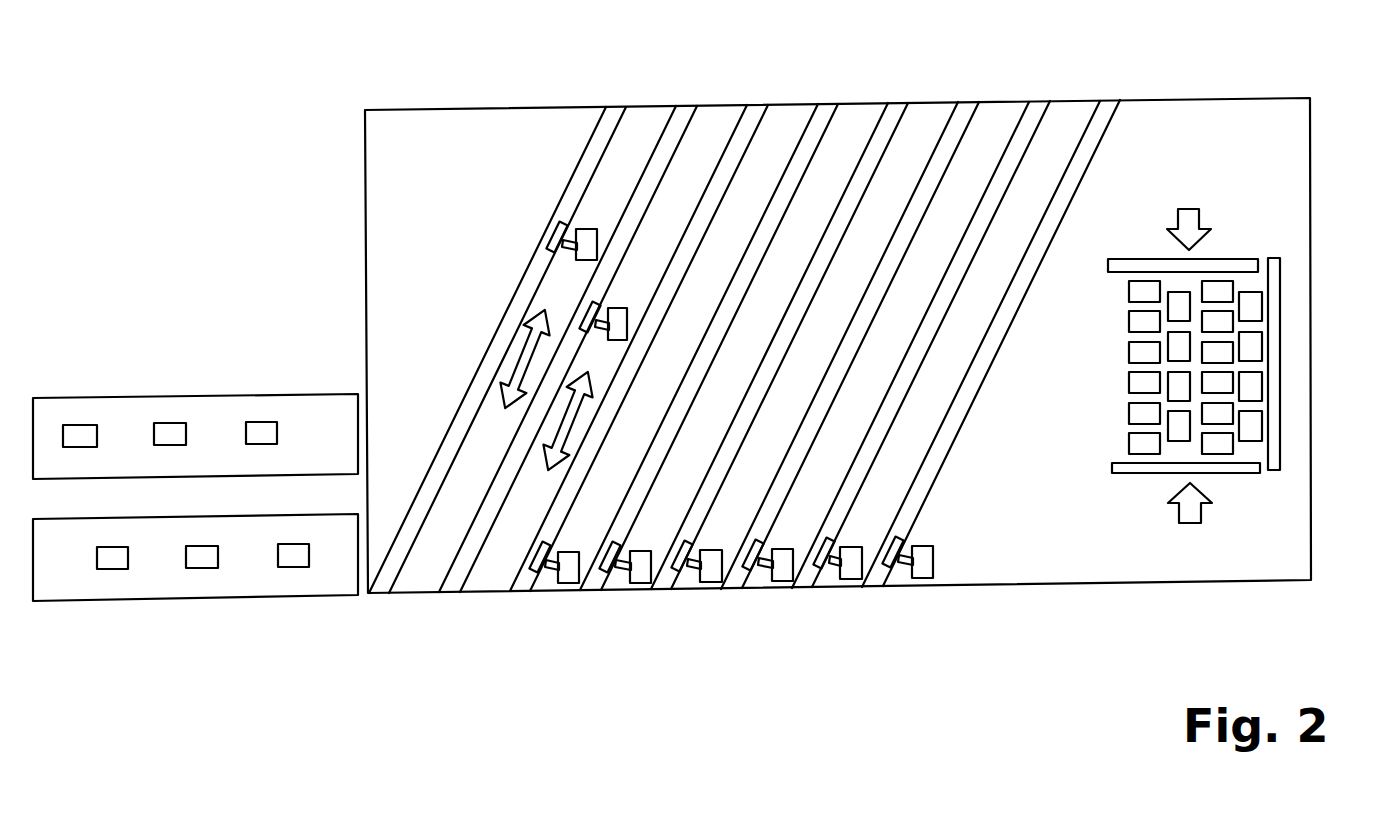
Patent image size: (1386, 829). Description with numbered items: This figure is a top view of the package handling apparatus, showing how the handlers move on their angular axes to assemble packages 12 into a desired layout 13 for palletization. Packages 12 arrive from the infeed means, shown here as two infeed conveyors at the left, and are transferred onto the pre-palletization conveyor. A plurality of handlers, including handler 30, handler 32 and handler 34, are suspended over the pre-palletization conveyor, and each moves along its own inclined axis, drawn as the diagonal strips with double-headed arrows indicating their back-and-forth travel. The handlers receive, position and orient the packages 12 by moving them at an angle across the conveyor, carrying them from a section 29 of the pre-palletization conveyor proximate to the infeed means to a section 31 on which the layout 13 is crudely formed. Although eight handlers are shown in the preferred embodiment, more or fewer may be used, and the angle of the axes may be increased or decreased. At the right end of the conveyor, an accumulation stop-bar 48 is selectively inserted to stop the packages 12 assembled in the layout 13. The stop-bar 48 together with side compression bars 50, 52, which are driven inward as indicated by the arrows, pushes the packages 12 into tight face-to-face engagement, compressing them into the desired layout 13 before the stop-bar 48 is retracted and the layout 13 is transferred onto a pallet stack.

The packages 12 is at (177, 435).
The layout 13 is at (1142, 440).
The section of the pre-palletization conveyor 29 is at (418, 575).
The handler 30 is at (598, 247).
The section of the pre-palletization conveyor 31 is at (443, 192).
The handler 32 is at (617, 322).
The handler 34 is at (568, 583).
The accumulation stop-bar 48 is at (1280, 338).
The side compression bar 50 is at (1133, 473).
The side compression bar 52 is at (1158, 260).